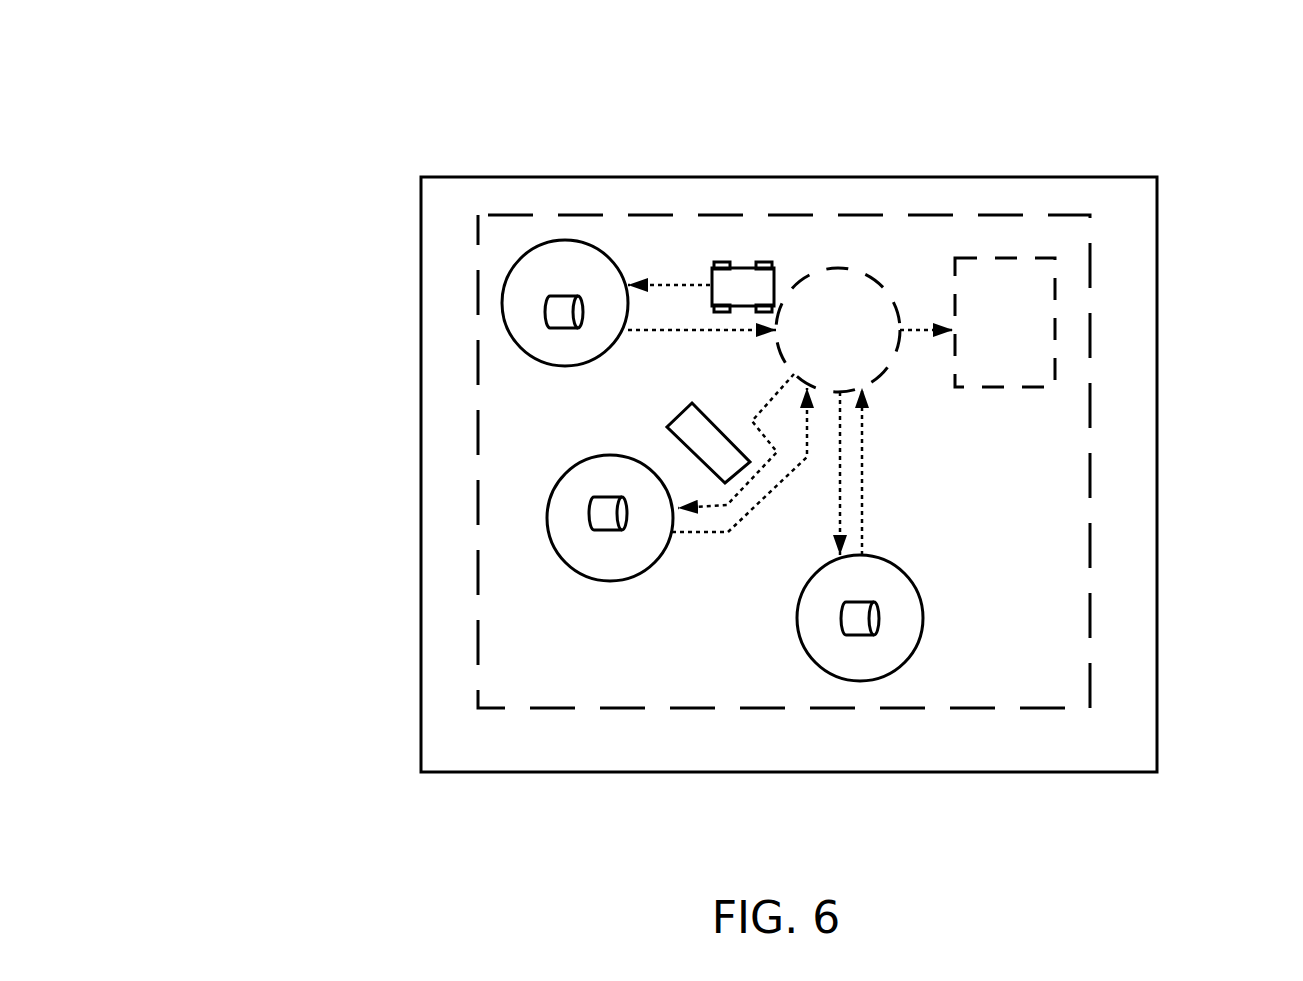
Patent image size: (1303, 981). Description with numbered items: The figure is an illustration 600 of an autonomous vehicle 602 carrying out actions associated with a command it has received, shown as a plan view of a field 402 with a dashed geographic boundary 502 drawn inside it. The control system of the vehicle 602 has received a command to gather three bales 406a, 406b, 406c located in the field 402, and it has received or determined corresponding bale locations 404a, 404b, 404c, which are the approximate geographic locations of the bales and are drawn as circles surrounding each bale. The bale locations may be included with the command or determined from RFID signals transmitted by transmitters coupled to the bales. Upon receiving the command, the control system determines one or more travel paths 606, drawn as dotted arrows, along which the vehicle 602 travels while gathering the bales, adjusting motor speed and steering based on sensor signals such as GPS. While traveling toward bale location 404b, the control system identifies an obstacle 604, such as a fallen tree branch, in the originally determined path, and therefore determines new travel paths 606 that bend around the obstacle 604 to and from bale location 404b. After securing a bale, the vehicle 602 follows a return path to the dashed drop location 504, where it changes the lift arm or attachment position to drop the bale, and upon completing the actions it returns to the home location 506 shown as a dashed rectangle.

The illustration 600 is at (138, 73).
The field 402 is at (507, 177).
The geographic boundary 502 is at (722, 214).
The vehicle 602 is at (756, 261).
The drop location 504 is at (858, 267).
The home location 506 is at (1062, 310).
The bale location 404a is at (505, 274).
The bale location 404b is at (545, 521).
The bale location 404c is at (826, 676).
The bale 406a is at (542, 314).
The bale 406b is at (587, 532).
The bale 406c is at (864, 639).
The obstacle 604 is at (665, 428).
The travel paths 606 is at (728, 540).